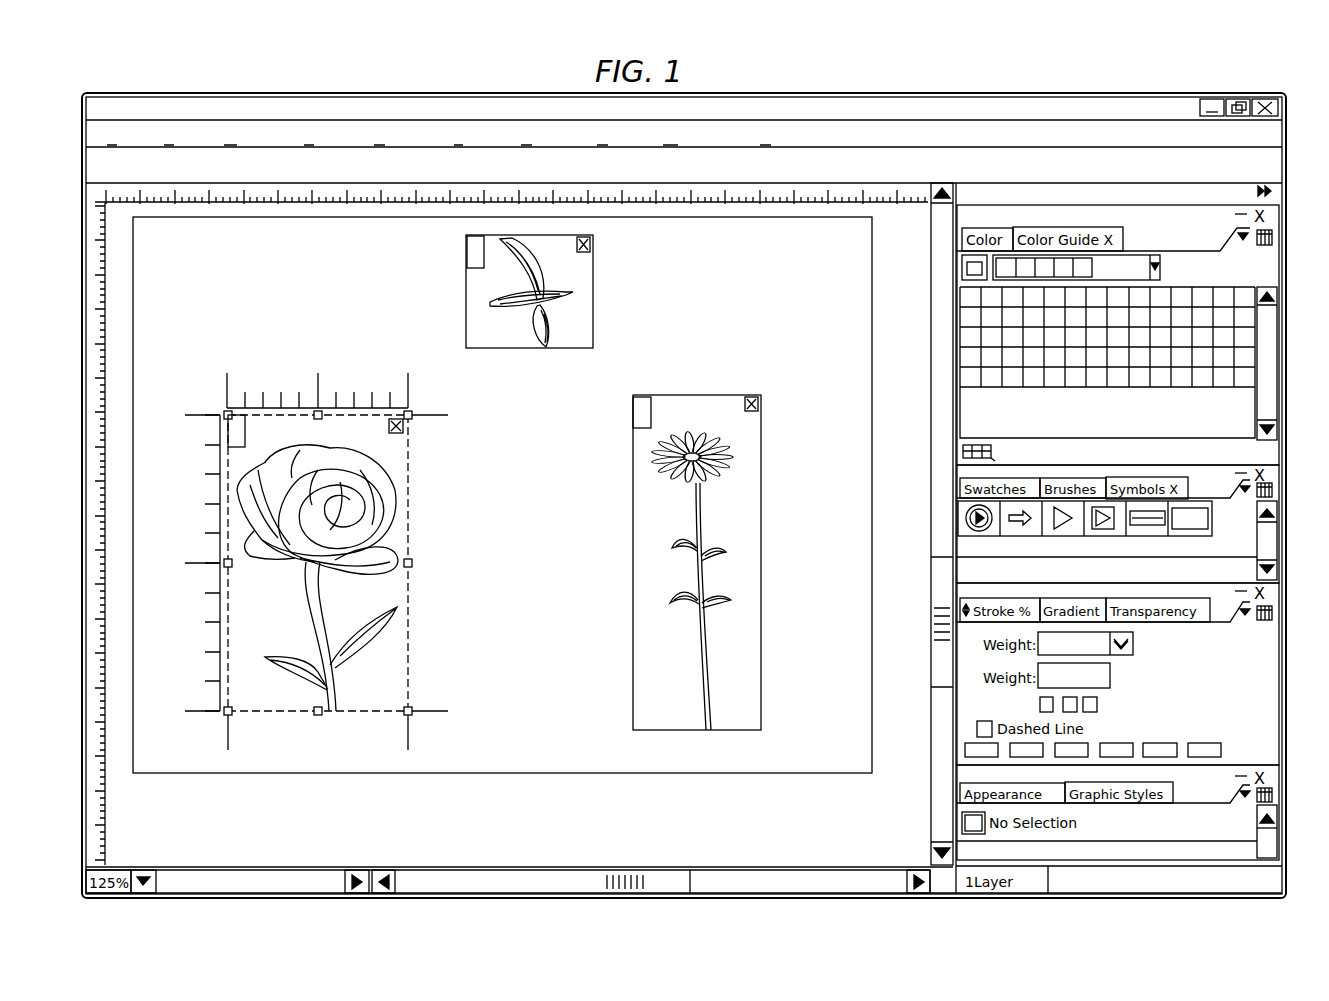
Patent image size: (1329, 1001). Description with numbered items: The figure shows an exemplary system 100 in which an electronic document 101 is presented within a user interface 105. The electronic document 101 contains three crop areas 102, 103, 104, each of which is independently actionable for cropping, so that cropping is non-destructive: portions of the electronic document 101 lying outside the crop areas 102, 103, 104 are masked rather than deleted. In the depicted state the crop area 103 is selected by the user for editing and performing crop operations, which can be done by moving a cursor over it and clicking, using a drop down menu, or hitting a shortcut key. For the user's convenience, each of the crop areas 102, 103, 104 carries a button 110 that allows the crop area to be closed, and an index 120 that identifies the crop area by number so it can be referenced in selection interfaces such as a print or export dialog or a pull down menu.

The system 100 is at (1241, 76).
The user interface 105 is at (1010, 92).
The electronic document 101 is at (862, 806).
The crop area 102 is at (705, 555).
The crop area 103 is at (408, 615).
The crop area 104 is at (593, 298).
The button 110 is at (752, 396).
The index 120 is at (633, 396).